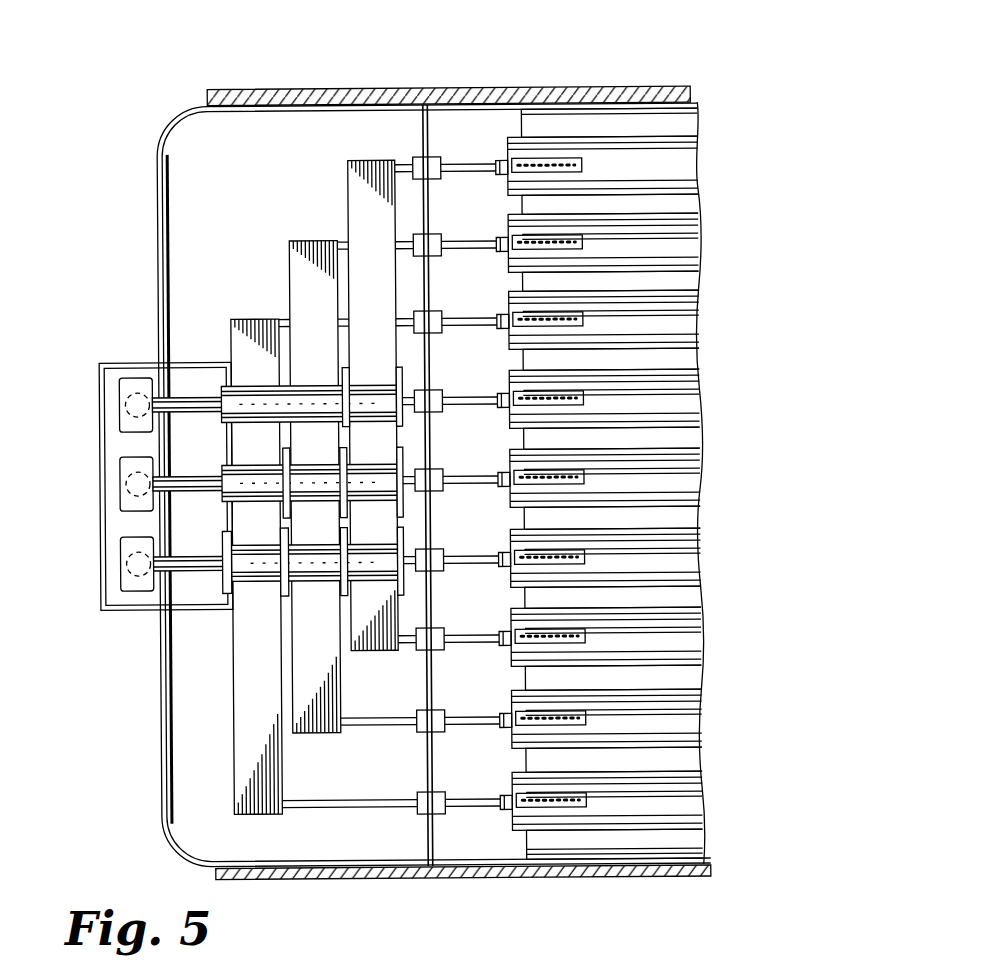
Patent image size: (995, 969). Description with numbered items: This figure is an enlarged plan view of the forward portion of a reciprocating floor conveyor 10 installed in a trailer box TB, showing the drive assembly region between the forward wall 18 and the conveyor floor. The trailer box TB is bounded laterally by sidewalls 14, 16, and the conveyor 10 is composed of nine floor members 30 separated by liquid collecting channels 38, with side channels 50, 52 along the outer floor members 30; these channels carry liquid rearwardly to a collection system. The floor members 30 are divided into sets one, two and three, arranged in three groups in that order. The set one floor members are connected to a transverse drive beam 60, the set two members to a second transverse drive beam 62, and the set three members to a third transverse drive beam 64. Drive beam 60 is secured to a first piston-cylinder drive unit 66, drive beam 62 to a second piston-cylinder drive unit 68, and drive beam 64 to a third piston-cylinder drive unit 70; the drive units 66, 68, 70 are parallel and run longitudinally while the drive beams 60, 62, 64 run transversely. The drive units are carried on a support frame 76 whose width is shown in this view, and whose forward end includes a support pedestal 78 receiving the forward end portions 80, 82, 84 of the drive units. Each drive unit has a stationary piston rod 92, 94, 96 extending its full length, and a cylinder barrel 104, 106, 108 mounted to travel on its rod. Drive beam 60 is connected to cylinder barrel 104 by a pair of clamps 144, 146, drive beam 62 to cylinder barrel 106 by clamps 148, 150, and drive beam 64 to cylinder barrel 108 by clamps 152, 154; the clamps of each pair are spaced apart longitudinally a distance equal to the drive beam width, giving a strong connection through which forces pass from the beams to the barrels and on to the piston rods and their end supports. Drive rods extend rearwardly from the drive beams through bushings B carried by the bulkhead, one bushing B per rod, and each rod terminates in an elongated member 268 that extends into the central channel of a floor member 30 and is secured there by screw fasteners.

The reciprocating floor conveyor 10 is at (712, 537).
The sidewall 14 is at (615, 868).
The sidewall 16 is at (598, 87).
The forward wall 18 is at (158, 738).
The floor members 30 is at (690, 164).
The liquid collecting channels 38 is at (688, 204).
The side channel 50 is at (700, 835).
The side channel 52 is at (690, 124).
The transverse drive beam 60 is at (350, 188).
The second transverse drive beam 62 is at (308, 268).
The third transverse drive beam 64 is at (231, 322).
The first piston-cylinder drive unit 66 is at (190, 418).
The second piston-cylinder drive unit 68 is at (188, 497).
The third piston-cylinder drive unit 70 is at (190, 548).
The support frame 76 is at (137, 355).
The support pedestal 78 is at (112, 410).
The forward end portion 80 is at (120, 391).
The forward end portion 82 is at (120, 484).
The forward end portion 84 is at (120, 579).
The piston rod 92 is at (186, 400).
The piston rod 94 is at (197, 478).
The piston rod 96 is at (208, 552).
The cylinder barrel 104 is at (303, 400).
The cylinder barrel 106 is at (257, 478).
The cylinder barrel 108 is at (367, 568).
The clamp 144 is at (353, 397).
The clamp 146 is at (400, 427).
The clamp 148 is at (287, 483).
The clamp 150 is at (342, 487).
The clamp 152 is at (224, 593).
The clamp 154 is at (290, 588).
The elongated member 268 is at (507, 153).
The bushing B is at (416, 157).
The trailer box TB is at (490, 883).